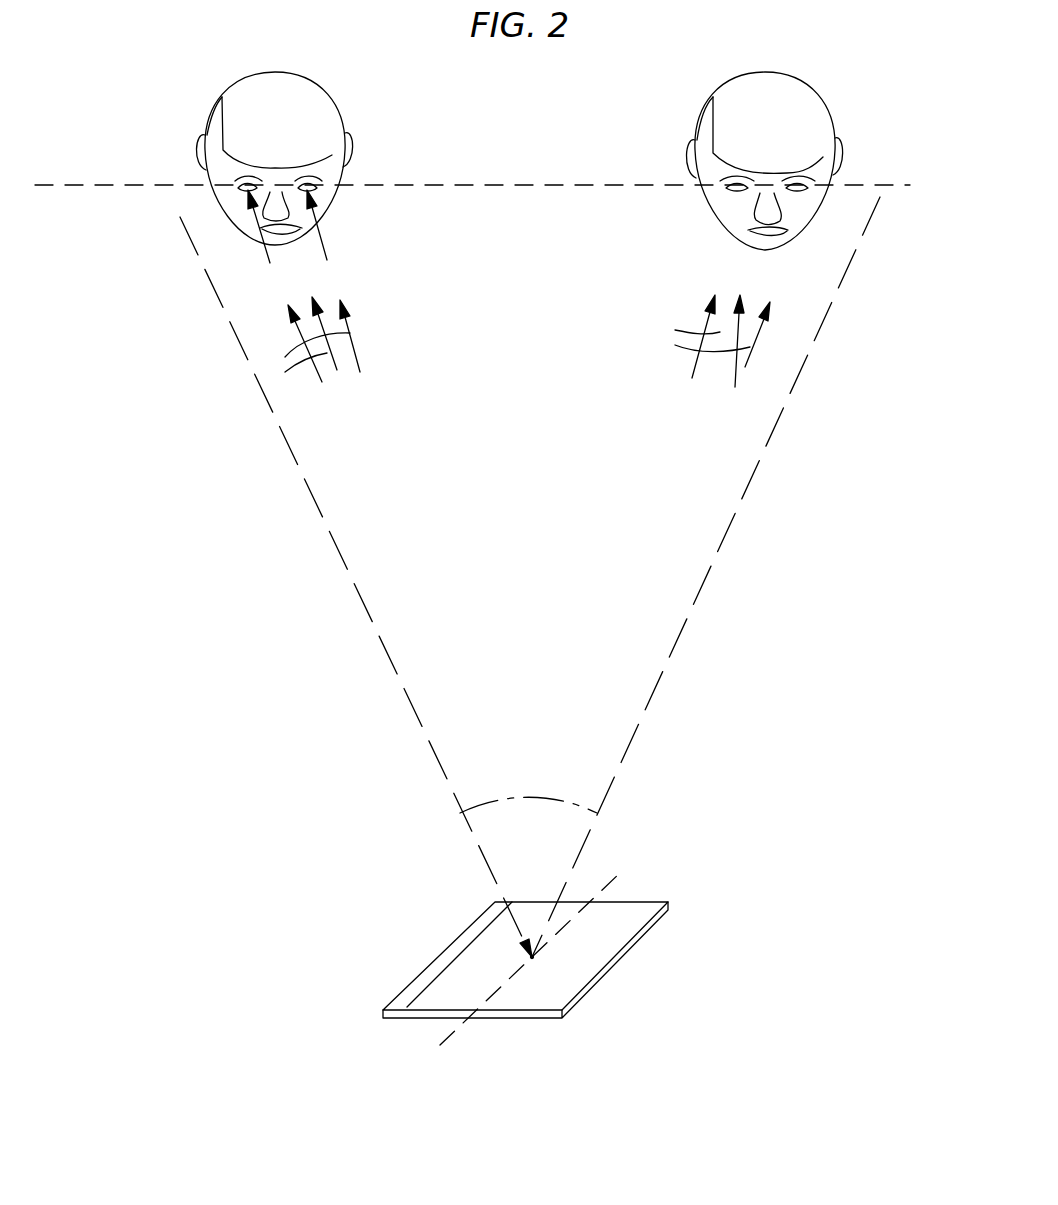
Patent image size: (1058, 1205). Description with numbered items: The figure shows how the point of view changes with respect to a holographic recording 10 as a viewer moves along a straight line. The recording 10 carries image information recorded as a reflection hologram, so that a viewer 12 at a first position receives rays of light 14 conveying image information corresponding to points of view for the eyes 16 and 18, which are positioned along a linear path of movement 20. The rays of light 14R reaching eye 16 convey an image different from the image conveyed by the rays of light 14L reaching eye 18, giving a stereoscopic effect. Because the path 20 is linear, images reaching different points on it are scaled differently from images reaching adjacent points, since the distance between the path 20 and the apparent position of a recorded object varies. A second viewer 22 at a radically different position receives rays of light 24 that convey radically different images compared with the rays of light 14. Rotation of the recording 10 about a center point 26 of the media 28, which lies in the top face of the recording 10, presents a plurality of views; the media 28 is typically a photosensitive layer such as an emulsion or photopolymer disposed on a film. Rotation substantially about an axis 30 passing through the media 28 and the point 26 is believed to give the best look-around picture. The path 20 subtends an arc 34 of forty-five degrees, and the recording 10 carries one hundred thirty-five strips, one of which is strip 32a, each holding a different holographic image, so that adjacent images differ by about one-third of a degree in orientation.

The recording 10 is at (668, 906).
The viewer 12 is at (318, 110).
The rays of light 14 is at (303, 360).
The rays of light 14R is at (267, 252).
The rays of light 14L is at (323, 232).
The eye 16 is at (240, 189).
The eye 18 is at (312, 180).
The linear path of movement 20 is at (465, 183).
The viewer 22 is at (798, 100).
The rays of light 24 is at (708, 341).
The center point 26 is at (525, 960).
The media 28 is at (620, 935).
The axis 30 is at (617, 877).
The strip 32a is at (433, 962).
The arc 34 is at (546, 798).